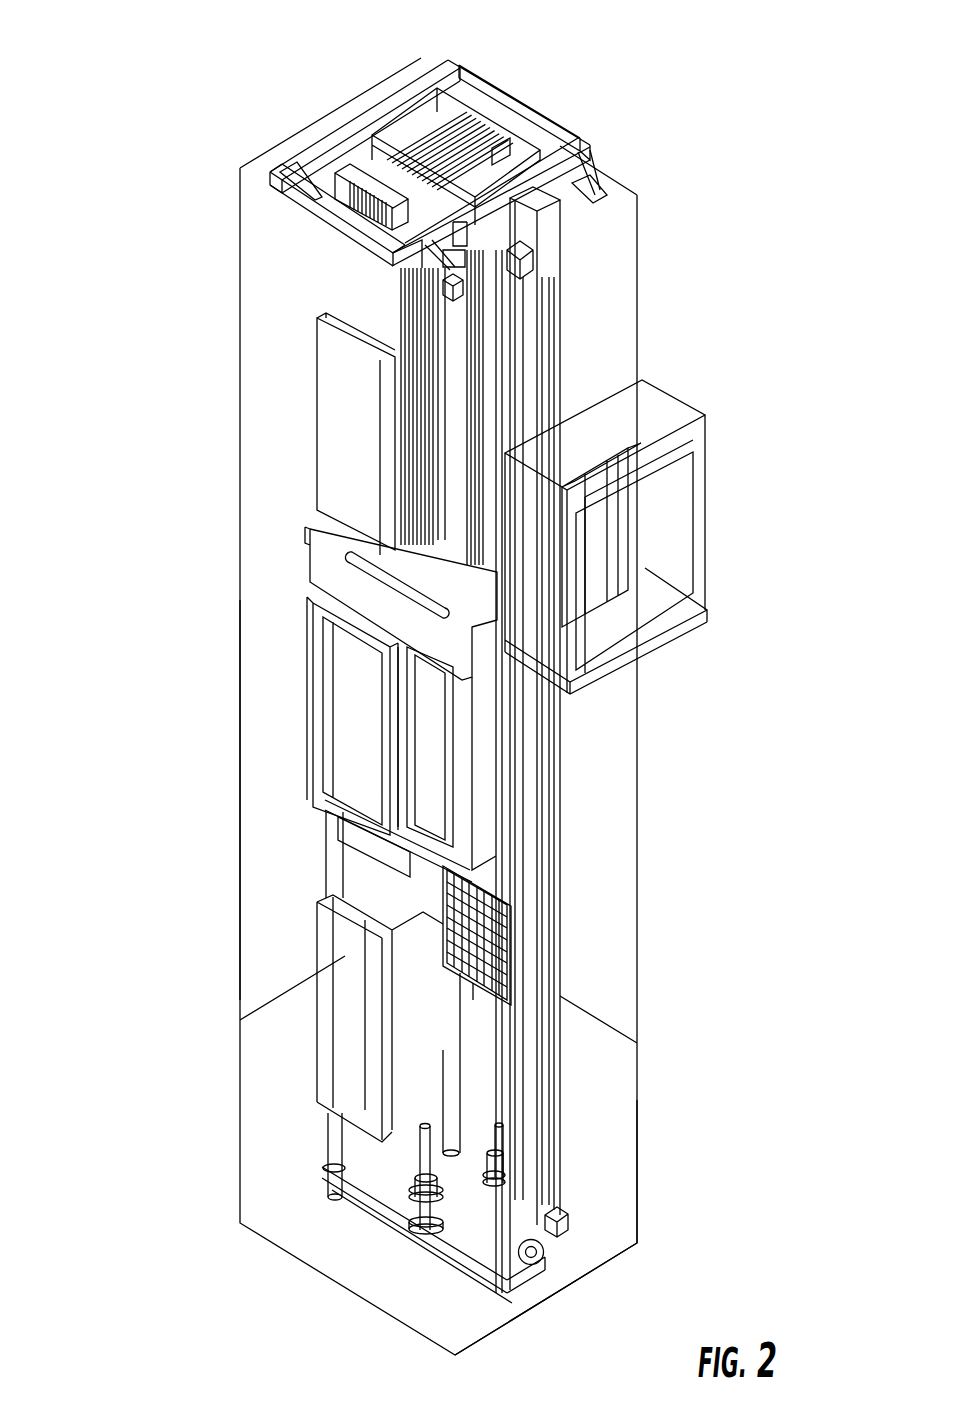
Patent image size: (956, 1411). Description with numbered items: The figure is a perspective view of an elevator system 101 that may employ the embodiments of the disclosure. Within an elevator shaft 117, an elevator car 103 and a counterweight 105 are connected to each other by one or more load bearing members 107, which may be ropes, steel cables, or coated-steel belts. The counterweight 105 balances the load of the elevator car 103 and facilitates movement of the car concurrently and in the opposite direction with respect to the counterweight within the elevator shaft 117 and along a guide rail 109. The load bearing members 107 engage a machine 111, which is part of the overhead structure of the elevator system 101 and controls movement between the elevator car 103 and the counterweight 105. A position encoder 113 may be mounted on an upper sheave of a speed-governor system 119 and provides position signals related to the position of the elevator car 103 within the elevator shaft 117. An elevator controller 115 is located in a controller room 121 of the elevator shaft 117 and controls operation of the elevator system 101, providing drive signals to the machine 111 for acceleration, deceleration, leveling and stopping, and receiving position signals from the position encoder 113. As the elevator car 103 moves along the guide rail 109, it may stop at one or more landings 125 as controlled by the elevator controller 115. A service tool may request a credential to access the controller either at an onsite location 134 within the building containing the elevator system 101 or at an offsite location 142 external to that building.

The elevator system 101 is at (672, 80).
The elevator car 103 is at (437, 752).
The counterweight 105 is at (490, 952).
The load bearing members 107 is at (447, 419).
The guide rail 109 is at (528, 870).
The machine 111 is at (355, 170).
The position encoder 113 is at (398, 253).
The elevator controller 115 is at (640, 550).
The elevator shaft 117 is at (293, 888).
The speed-governor system 119 is at (548, 295).
The controller room 121 is at (720, 405).
The landings 125 is at (317, 420).
The onsite location 134 is at (728, 1058).
The offsite location 142 is at (62, 826).